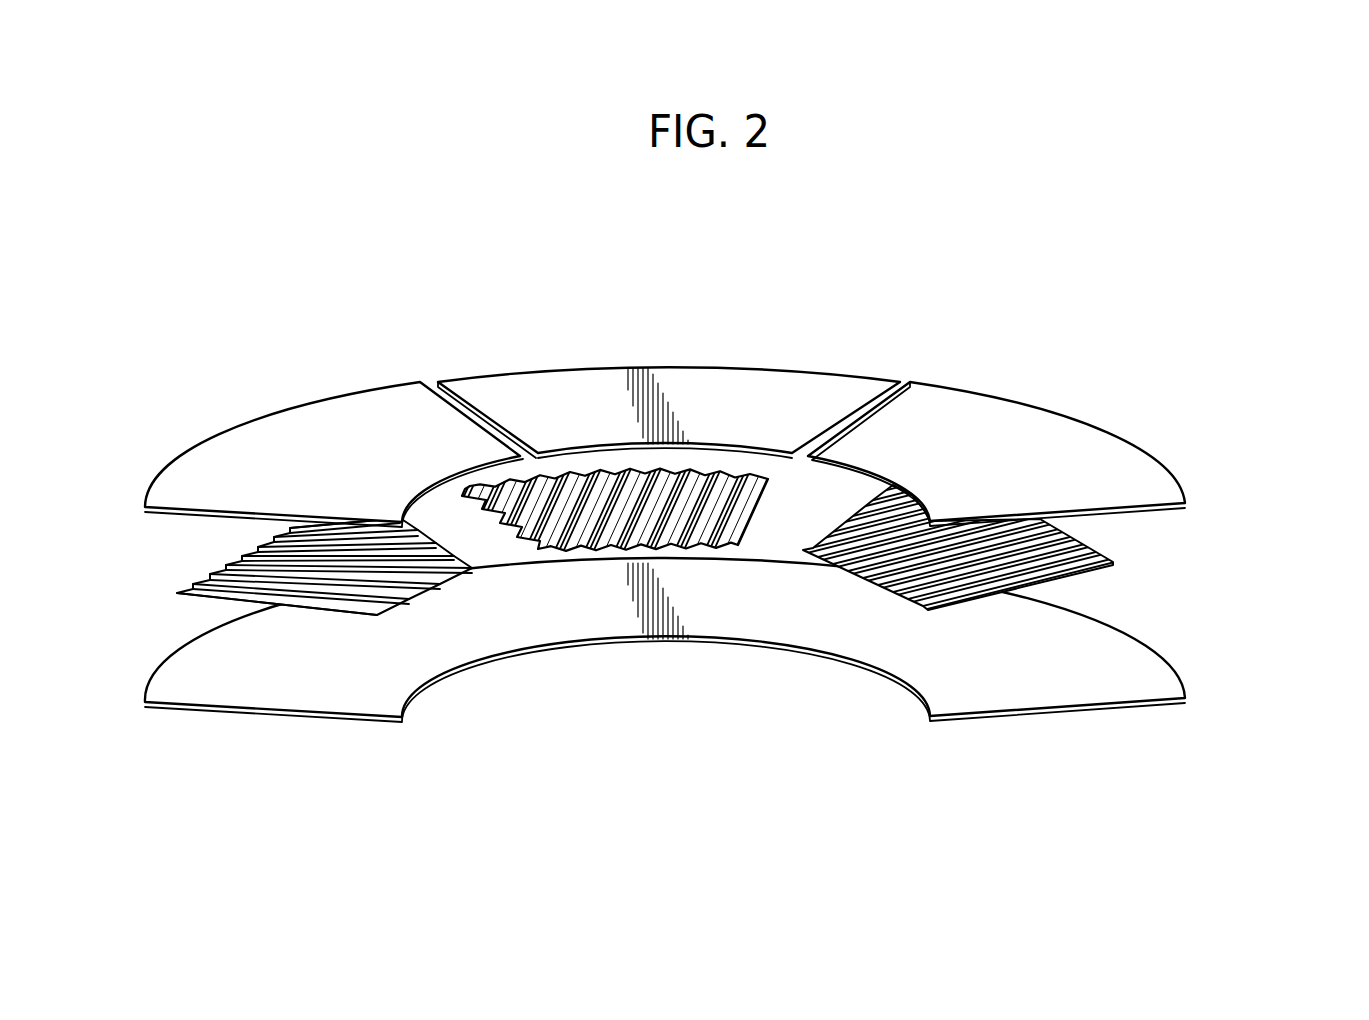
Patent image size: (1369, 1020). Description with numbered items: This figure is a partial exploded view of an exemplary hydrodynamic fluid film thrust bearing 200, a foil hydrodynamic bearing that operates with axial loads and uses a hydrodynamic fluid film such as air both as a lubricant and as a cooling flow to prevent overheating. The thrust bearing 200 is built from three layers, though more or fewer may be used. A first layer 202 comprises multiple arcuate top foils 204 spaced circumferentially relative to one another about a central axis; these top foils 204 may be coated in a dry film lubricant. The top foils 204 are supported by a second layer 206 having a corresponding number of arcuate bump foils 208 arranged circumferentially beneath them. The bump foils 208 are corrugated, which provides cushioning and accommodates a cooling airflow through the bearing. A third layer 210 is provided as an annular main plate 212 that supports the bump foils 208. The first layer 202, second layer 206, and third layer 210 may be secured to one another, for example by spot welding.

The thrust bearing 200 is at (178, 428).
The first layer 202 is at (742, 419).
The arcuate top foils 204 is at (331, 401).
The second layer 206 is at (1143, 554).
The arcuate bump foils 208 is at (208, 569).
The third layer 210 is at (1211, 681).
The annular main plate 212 is at (604, 648).